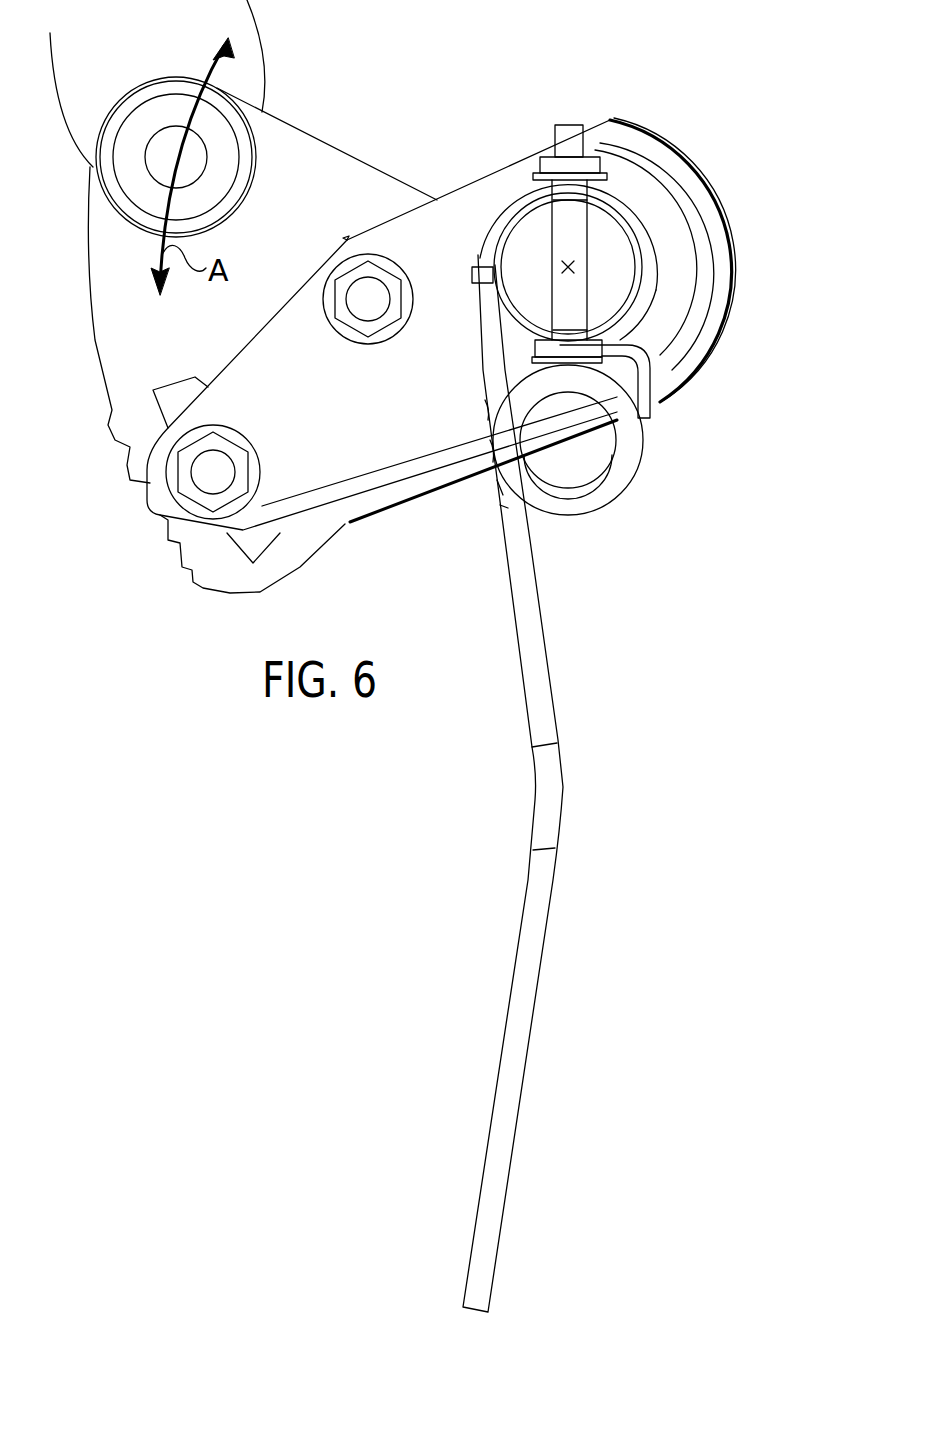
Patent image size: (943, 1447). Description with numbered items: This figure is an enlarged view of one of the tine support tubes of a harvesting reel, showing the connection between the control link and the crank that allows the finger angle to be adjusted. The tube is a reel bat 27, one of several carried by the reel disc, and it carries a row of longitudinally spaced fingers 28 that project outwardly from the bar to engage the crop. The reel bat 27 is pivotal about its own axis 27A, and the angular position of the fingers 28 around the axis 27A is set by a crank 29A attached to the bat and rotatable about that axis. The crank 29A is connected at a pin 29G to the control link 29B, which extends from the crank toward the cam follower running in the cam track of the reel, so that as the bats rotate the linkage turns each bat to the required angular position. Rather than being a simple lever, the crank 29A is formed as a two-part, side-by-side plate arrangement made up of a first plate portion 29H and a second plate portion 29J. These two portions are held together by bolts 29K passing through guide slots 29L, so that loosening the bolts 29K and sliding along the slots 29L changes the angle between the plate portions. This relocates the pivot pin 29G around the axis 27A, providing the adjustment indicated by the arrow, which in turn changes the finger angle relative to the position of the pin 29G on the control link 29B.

The reel bat 27 is at (622, 223).
The axis of the bat 27A is at (570, 267).
The fingers 28 is at (533, 645).
The crank 29A is at (363, 185).
The control link 29B is at (246, 48).
The pin 29G is at (152, 163).
The first plate portion 29H is at (118, 323).
The second plate portion 29J is at (355, 458).
The bolts 29K is at (217, 462).
The guide slots 29L is at (172, 382).